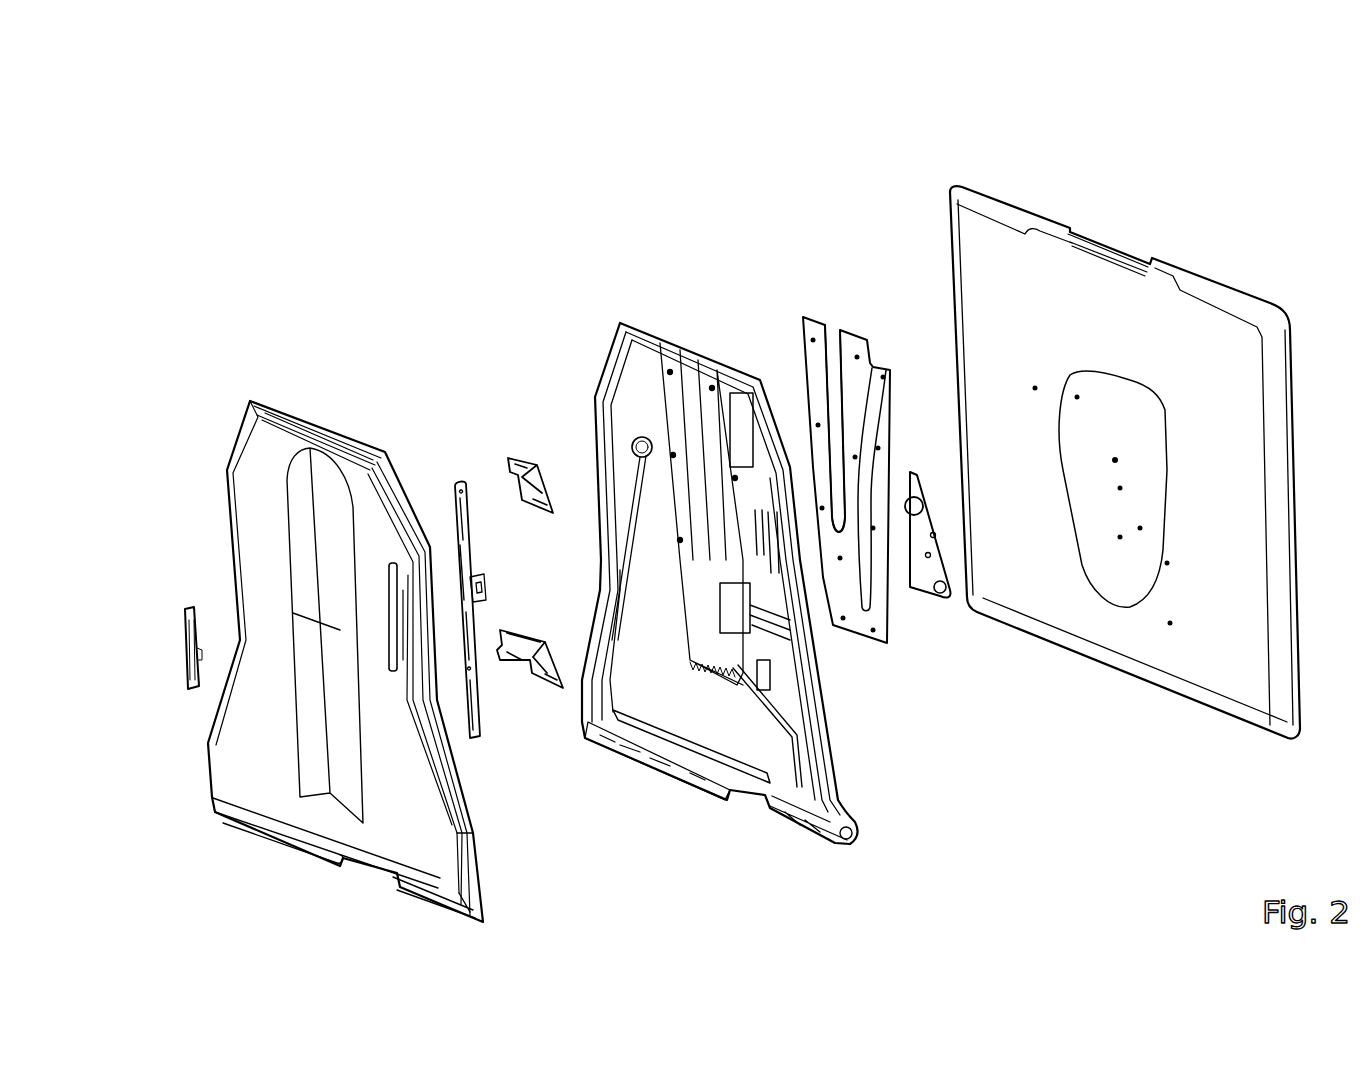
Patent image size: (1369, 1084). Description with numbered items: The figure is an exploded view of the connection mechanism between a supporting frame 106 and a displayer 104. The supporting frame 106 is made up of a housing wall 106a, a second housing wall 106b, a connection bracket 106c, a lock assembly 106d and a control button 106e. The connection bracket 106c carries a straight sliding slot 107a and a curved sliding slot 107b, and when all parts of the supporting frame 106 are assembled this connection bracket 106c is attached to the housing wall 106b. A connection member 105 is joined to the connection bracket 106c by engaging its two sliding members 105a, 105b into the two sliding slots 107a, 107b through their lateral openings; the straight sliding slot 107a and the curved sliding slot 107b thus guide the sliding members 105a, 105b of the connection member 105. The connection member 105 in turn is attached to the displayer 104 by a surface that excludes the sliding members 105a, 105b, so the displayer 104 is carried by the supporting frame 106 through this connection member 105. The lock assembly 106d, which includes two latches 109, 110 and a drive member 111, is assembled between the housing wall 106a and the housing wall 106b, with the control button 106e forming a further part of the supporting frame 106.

The displayer 104 is at (990, 237).
The connection member 105 is at (920, 583).
The sliding member 105a is at (908, 473).
The sliding member 105b is at (942, 593).
The supporting frame 106 is at (687, 103).
The housing wall 106a is at (268, 457).
The housing wall 106b is at (607, 368).
The connection bracket 106c is at (812, 297).
The lock assembly 106d is at (432, 338).
The control button 106e is at (185, 603).
The straight sliding slot 107a is at (825, 333).
The curved sliding slot 107b is at (875, 365).
The latch 109 is at (522, 450).
The latch 110 is at (513, 672).
The drive member 111 is at (459, 478).